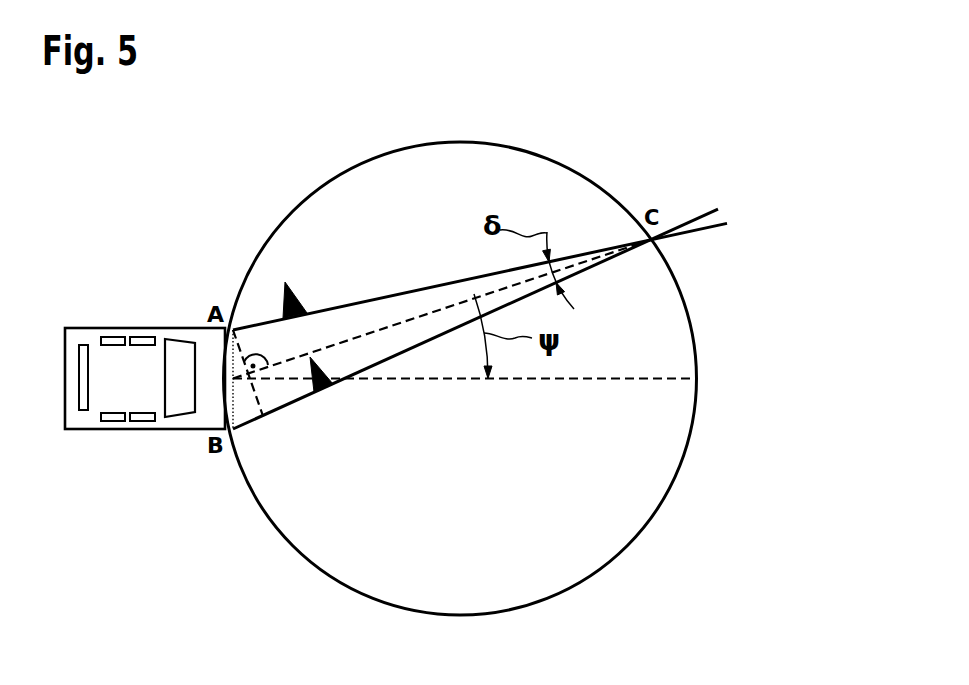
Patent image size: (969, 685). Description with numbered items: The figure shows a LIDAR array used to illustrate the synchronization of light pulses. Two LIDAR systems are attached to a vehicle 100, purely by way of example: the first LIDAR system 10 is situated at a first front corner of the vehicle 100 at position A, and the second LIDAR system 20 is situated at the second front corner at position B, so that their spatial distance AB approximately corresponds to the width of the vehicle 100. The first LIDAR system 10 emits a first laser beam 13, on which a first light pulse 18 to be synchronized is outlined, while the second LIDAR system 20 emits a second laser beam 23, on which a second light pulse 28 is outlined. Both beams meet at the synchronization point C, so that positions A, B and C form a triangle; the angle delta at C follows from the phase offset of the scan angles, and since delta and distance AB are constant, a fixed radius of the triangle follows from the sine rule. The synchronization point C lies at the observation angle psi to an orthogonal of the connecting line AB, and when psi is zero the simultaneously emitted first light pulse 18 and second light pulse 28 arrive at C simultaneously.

The vehicle 100 is at (97, 430).
The first LIDAR system 10 is at (235, 432).
The second LIDAR system 20 is at (234, 328).
The second laser beam 23 is at (437, 286).
The first laser beam 13 is at (580, 273).
The second light pulse 28 is at (293, 288).
The first light pulse 18 is at (318, 363).